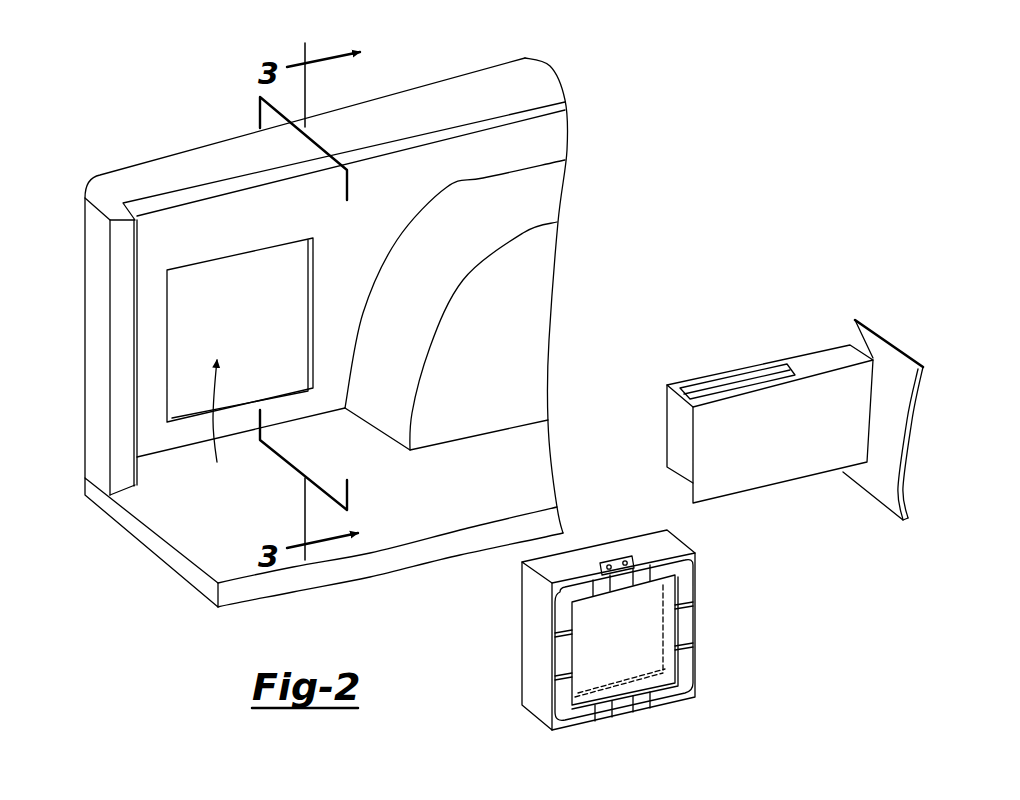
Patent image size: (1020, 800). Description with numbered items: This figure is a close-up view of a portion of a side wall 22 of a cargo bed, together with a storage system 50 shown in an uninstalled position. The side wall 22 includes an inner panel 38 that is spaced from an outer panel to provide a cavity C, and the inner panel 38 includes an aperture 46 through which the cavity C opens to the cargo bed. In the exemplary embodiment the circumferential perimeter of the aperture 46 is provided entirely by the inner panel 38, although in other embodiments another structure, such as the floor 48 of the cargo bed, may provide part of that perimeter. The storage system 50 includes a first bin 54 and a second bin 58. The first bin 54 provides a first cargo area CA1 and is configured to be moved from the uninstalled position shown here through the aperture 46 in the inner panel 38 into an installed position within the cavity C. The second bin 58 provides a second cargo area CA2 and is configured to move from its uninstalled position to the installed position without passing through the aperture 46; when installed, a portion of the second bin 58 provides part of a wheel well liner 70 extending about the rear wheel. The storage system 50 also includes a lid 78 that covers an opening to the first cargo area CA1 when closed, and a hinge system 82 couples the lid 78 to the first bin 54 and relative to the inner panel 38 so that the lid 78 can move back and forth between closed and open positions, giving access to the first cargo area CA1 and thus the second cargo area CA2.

The side wall 22 is at (448, 60).
The inner panel 38 is at (177, 227).
The aperture 46 is at (296, 318).
The floor 48 is at (190, 517).
The storage system 50 is at (805, 492).
The first bin 54 is at (533, 628).
The second bin 58 is at (825, 365).
The wheel well liner 70 is at (893, 388).
The lid 78 is at (645, 640).
The hinge system 82 is at (617, 558).
The cavity C is at (215, 427).
The first cargo area CA1 is at (615, 700).
The second cargo area CA2 is at (752, 377).